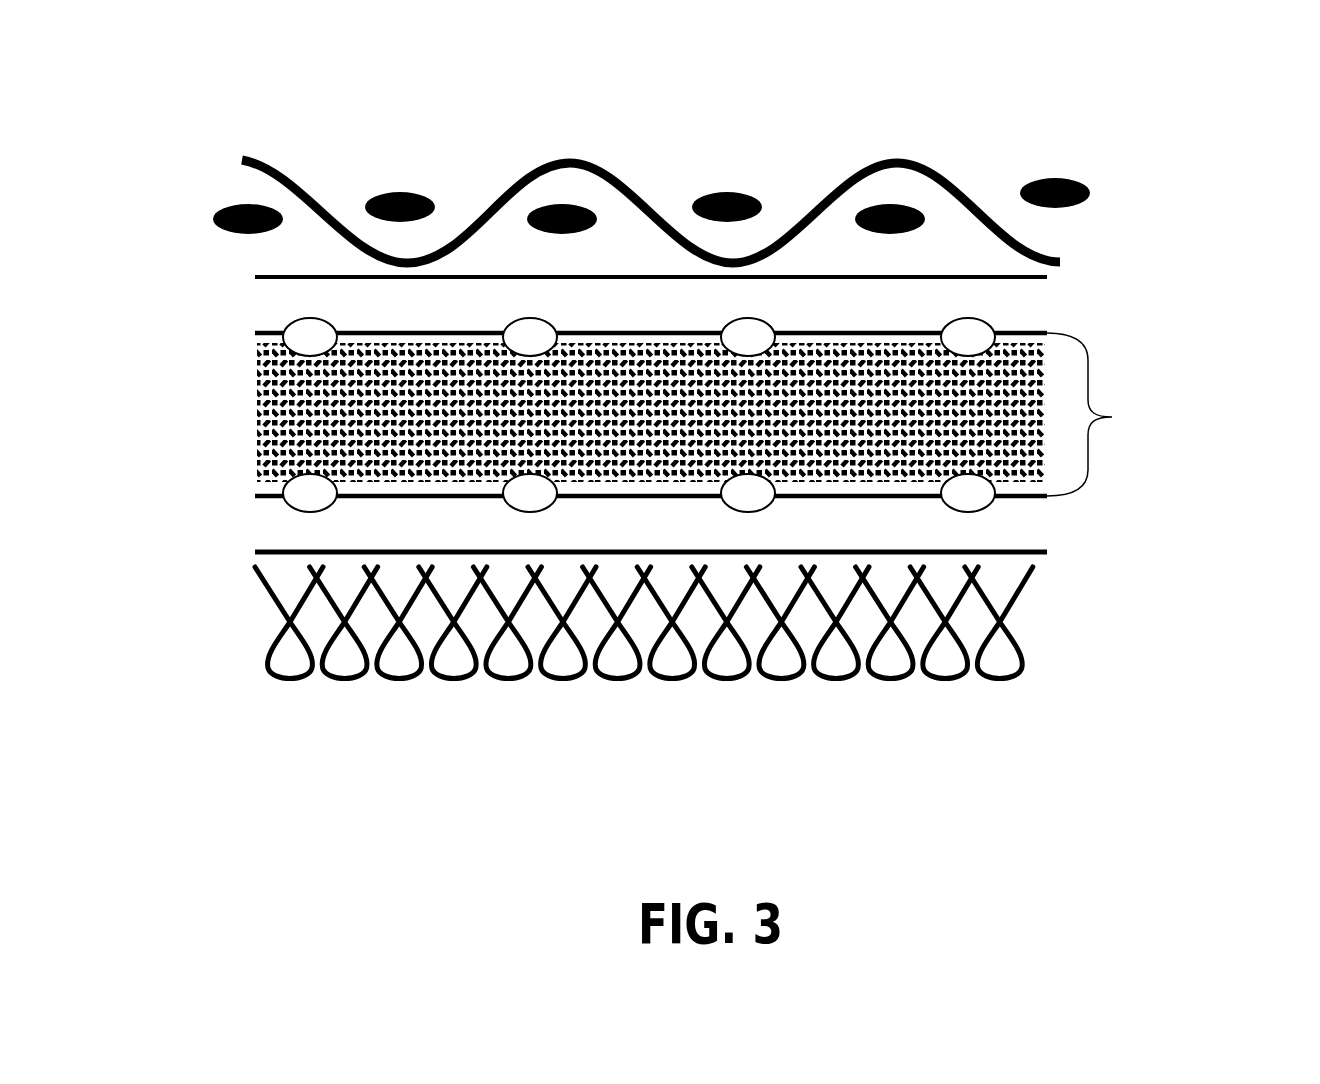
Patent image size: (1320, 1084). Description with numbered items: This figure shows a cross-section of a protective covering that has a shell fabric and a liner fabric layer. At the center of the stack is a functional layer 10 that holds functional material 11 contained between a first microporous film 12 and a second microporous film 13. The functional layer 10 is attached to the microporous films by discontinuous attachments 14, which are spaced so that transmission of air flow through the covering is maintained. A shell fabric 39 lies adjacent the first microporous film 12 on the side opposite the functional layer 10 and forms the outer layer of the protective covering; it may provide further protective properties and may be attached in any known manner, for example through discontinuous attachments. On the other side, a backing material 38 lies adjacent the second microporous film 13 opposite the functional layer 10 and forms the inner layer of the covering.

The functional layer 10 is at (695, 415).
The functional material 11 is at (1045, 370).
The first microporous film 12 is at (992, 305).
The second microporous film 13 is at (1005, 525).
The discontinuous attachments 14 is at (310, 495).
The backing material 38 is at (977, 622).
The shell fabric 39 is at (978, 180).